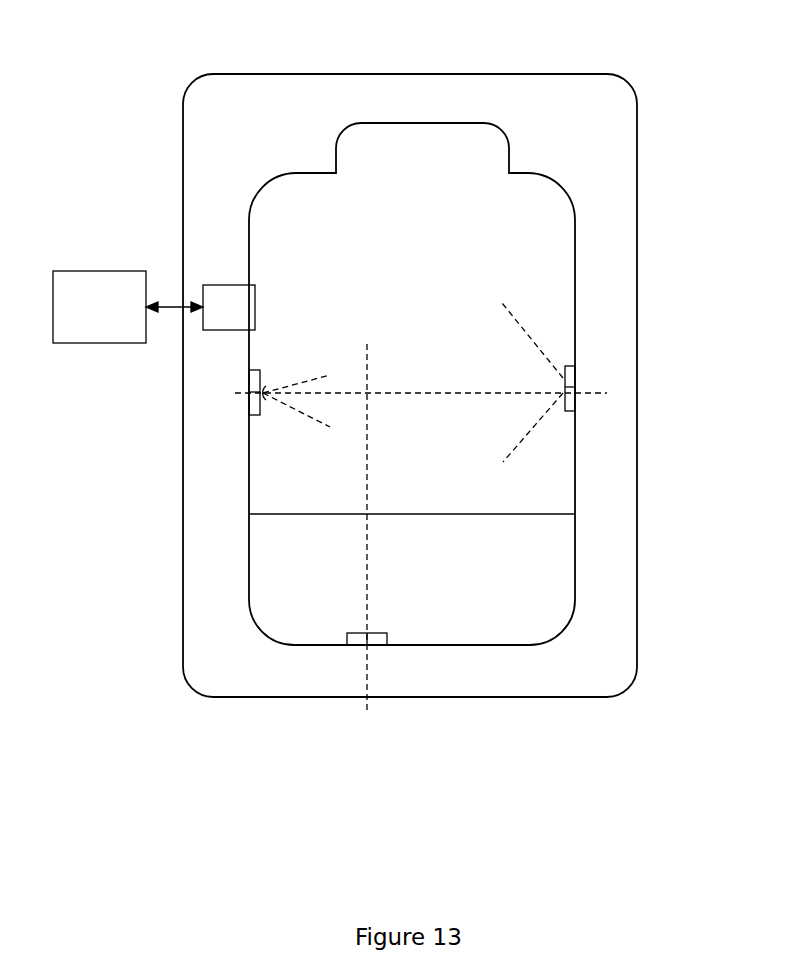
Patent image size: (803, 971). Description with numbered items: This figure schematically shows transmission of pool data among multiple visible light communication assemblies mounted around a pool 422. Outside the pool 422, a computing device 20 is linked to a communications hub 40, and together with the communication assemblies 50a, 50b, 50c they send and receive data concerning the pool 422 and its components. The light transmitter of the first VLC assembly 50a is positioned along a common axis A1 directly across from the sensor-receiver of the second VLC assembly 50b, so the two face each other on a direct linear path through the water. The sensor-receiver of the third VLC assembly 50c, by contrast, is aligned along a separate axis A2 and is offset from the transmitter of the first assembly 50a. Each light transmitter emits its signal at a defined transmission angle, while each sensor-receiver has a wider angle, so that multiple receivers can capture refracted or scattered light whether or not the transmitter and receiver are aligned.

The pool 422 is at (486, 198).
The computing device 20 is at (113, 320).
The communications hub 40 is at (218, 290).
The first VLC assembly 50a is at (258, 372).
The second VLC assembly 50b is at (572, 382).
The third VLC assembly 50c is at (380, 643).
The common axis A1 is at (413, 395).
The axis A2 is at (368, 570).